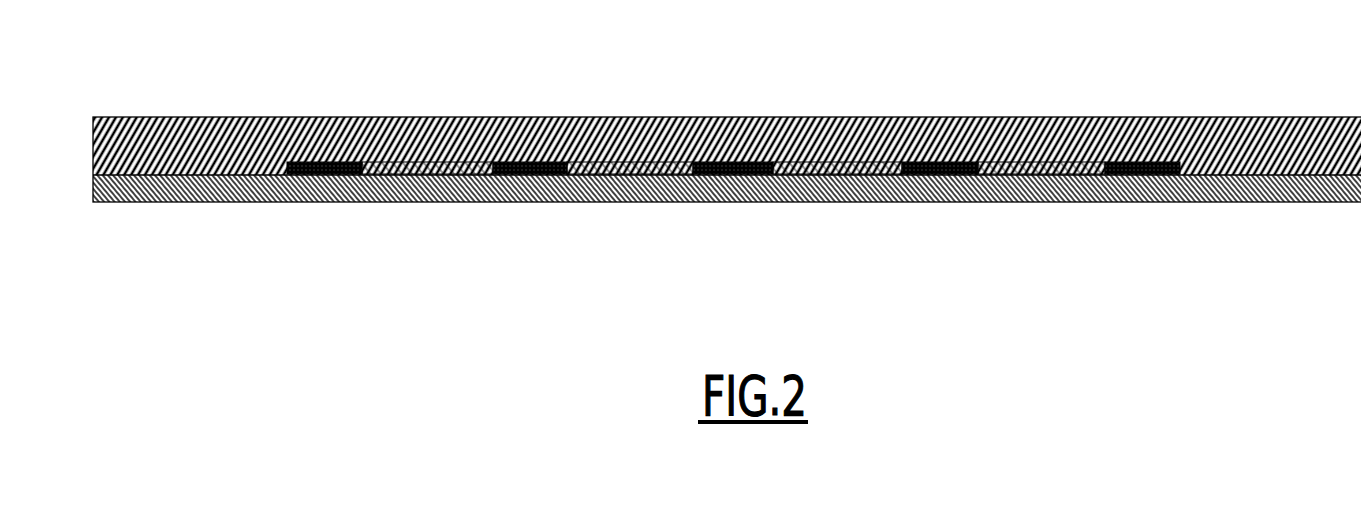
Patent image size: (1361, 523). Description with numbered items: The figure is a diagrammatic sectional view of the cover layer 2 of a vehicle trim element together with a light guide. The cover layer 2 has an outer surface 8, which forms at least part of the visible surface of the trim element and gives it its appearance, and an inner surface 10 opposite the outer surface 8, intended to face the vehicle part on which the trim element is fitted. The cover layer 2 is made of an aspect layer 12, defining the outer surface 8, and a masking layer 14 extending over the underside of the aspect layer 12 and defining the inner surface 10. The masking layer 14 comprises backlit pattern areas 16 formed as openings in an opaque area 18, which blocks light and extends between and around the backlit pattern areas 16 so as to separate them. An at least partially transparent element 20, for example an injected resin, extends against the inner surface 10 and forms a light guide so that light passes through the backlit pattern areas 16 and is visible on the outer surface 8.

The cover layer 2 is at (1217, 202).
The outer surface 8 is at (855, 202).
The inner surface 10 is at (820, 117).
The aspect layer 12 is at (305, 202).
The masking layer 14 is at (320, 118).
The backlit pattern areas 16 is at (600, 118).
The opaque area 18 is at (947, 117).
The at least partially transparent element 20 is at (1137, 117).